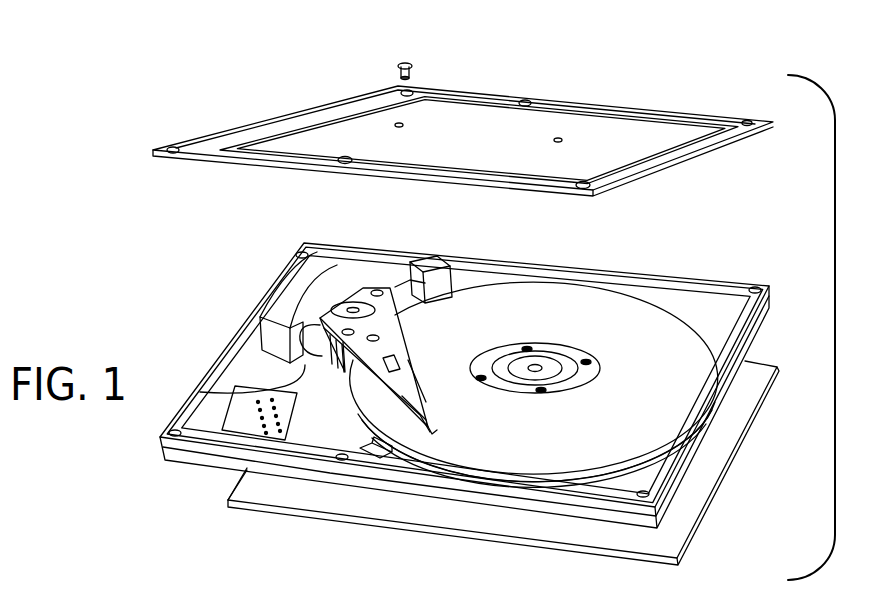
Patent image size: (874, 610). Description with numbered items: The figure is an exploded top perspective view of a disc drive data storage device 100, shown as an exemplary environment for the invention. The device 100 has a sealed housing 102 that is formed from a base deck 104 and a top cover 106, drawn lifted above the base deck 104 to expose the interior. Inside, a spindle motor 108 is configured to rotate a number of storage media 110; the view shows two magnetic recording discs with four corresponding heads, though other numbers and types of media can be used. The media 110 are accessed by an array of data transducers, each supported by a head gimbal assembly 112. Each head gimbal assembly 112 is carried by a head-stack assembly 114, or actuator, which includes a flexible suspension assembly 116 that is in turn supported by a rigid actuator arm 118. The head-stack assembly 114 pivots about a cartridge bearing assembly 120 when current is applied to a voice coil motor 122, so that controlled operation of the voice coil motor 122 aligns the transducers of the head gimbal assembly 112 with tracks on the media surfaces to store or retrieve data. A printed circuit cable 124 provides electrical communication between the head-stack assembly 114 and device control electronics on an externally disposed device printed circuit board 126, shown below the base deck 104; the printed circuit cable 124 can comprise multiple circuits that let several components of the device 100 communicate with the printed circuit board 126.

The disc drive data storage device 100 is at (126, 42).
The sealed housing 102 is at (190, 252).
The base deck 104 is at (710, 418).
The top cover 106 is at (555, 115).
The spindle motor 108 is at (545, 363).
The storage media 110 is at (592, 482).
The head gimbal assembly 112 is at (436, 430).
The head-stack assembly 114 is at (413, 337).
The flexible suspension assembly 116 is at (441, 405).
The rigid actuator arm 118 is at (420, 360).
The cartridge bearing assembly 120 is at (365, 290).
The voice coil motor 122 is at (353, 302).
The printed circuit cable 124 is at (267, 372).
The device printed circuit board 126 is at (228, 506).